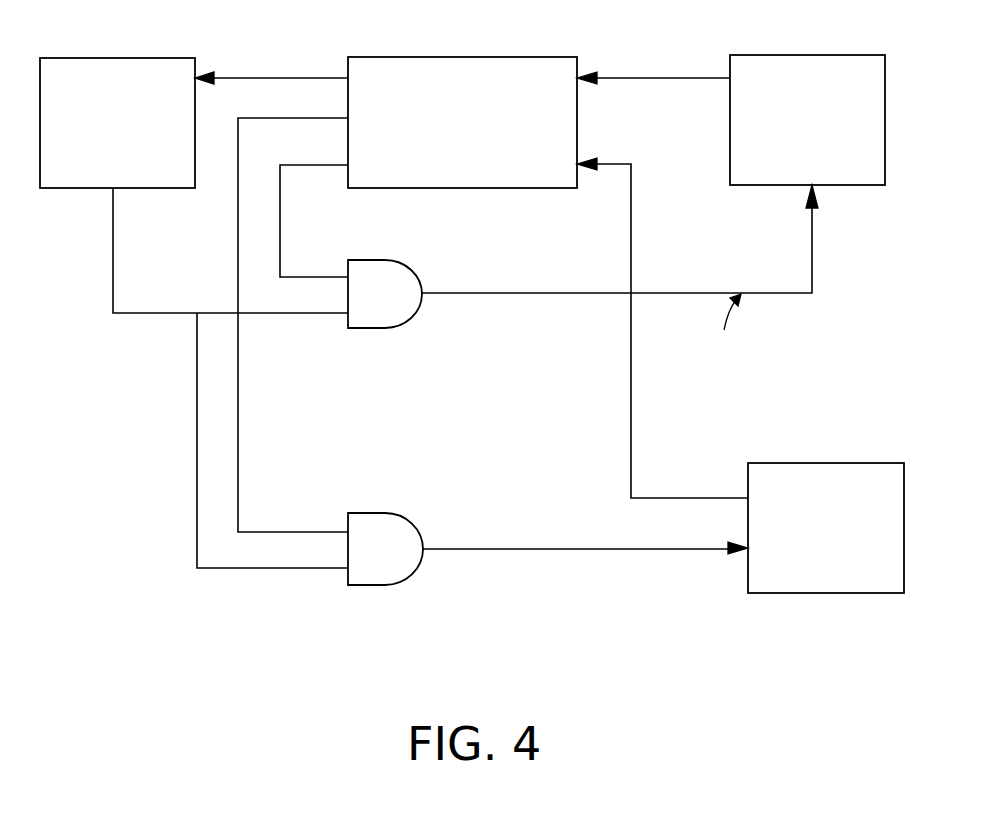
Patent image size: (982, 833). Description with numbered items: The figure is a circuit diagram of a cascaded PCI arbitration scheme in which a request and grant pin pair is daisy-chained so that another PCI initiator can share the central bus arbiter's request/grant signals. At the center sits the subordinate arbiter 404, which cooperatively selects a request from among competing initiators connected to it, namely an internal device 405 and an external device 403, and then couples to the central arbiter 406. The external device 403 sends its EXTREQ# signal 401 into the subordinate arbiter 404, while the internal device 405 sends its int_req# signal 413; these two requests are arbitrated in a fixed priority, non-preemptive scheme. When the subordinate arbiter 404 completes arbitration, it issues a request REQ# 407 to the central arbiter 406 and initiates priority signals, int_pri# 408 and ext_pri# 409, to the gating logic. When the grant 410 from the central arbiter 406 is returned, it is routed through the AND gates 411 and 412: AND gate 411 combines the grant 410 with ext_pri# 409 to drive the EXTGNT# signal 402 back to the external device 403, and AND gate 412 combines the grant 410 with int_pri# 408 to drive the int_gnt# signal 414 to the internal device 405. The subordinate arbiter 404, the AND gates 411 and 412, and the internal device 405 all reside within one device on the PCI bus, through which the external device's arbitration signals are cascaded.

The EXTREQ# signal 401 is at (650, 88).
The EXTGNT# signal 402 is at (550, 293).
The external device 403 is at (878, 88).
The subordinate arbiter 404 is at (568, 88).
The internal device 405 is at (897, 495).
The central arbiter 406 is at (188, 88).
The REQ# request 407 is at (300, 72).
The int_pri# signal 408 is at (238, 248).
The ext_pri# signal 409 is at (280, 210).
The grant 410 is at (166, 313).
The AND gate 411 is at (398, 305).
The AND gate 412 is at (398, 560).
The int_req# signal 413 is at (631, 397).
The int_gnt# signal 414 is at (578, 549).